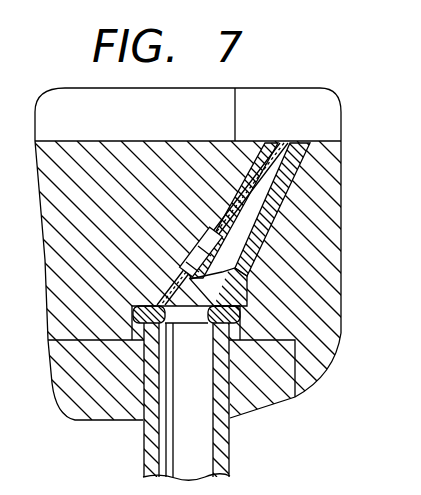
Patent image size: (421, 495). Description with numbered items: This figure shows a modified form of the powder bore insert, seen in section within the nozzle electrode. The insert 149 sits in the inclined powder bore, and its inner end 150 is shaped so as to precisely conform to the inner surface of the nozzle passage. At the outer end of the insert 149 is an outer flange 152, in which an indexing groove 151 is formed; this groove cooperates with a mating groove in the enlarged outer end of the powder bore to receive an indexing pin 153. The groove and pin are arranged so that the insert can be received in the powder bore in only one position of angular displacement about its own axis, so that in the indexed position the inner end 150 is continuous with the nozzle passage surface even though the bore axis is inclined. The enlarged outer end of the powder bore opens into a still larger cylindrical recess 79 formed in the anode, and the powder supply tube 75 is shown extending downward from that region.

The inner end 150 is at (300, 141).
The insert 149 is at (283, 210).
The outer flange 152 is at (238, 290).
The indexing groove 151 is at (180, 258).
The indexing pin 153 is at (203, 233).
The cylindrical recess 79 is at (230, 347).
The tube 75 is at (236, 446).